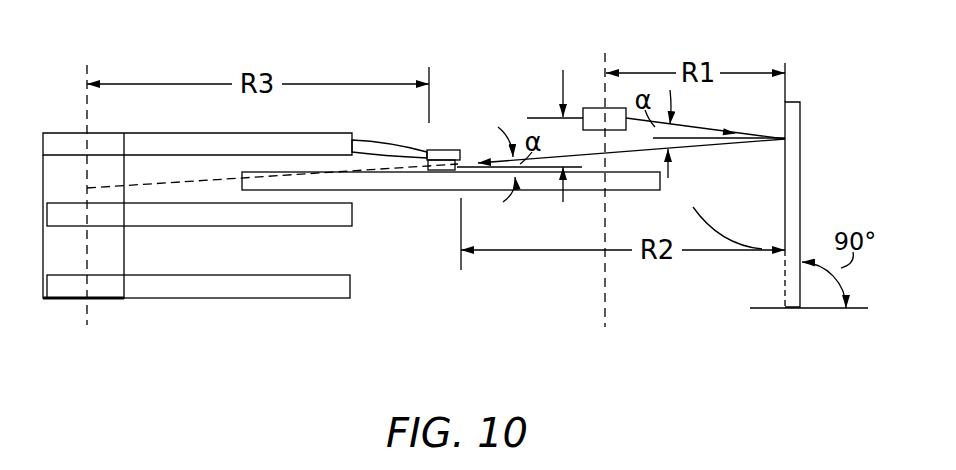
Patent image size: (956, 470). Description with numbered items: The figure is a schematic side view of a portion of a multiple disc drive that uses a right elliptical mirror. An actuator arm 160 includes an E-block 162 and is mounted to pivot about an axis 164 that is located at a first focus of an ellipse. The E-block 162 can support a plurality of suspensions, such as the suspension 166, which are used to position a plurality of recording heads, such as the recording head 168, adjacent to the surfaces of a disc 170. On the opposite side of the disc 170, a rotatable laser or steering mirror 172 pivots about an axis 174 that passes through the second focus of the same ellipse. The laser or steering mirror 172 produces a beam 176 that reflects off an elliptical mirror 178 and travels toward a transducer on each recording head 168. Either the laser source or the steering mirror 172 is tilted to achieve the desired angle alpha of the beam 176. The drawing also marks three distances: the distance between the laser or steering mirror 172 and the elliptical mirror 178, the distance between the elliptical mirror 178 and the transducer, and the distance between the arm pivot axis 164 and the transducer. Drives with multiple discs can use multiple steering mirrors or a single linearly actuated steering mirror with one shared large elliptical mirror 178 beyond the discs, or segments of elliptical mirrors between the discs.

The actuator arm 160 is at (163, 333).
The E-block 162 is at (258, 290).
The axis 164 is at (86, 118).
The suspension 166 is at (392, 143).
The recording head 168 is at (438, 158).
The disc 170 is at (397, 190).
The rotatable laser or steering mirror 172 is at (592, 114).
The axis 174 is at (605, 307).
The beam 176 is at (698, 127).
The elliptical mirror 178 is at (802, 178).